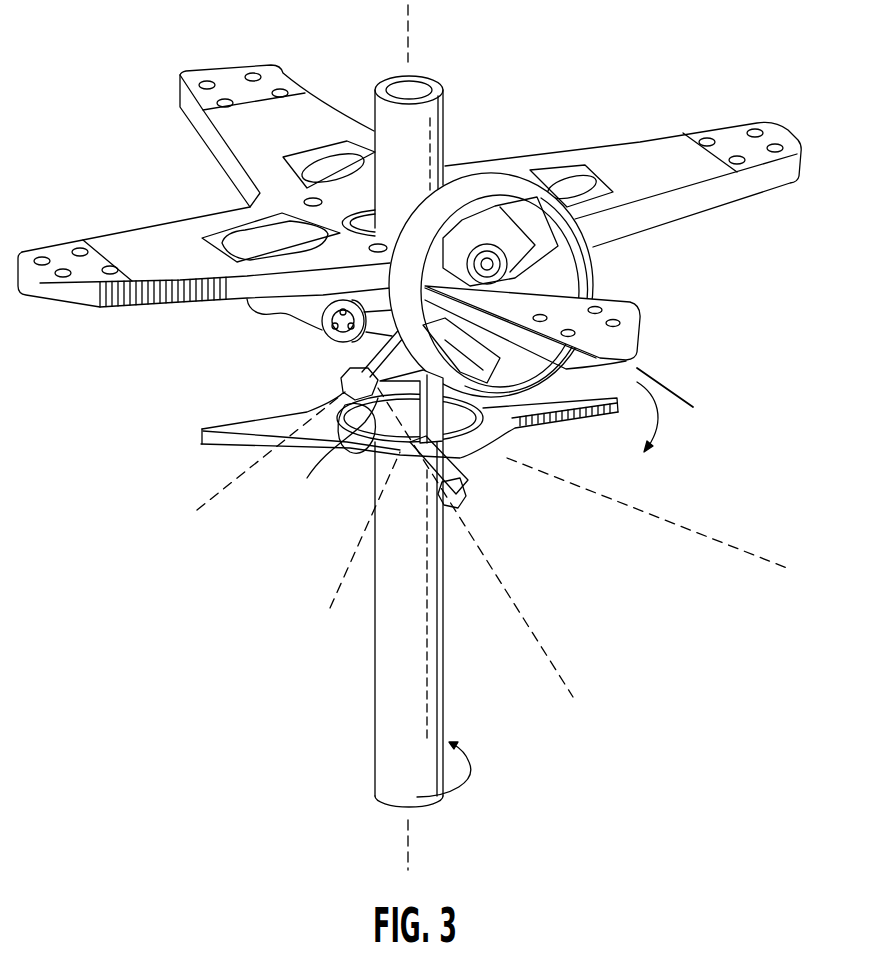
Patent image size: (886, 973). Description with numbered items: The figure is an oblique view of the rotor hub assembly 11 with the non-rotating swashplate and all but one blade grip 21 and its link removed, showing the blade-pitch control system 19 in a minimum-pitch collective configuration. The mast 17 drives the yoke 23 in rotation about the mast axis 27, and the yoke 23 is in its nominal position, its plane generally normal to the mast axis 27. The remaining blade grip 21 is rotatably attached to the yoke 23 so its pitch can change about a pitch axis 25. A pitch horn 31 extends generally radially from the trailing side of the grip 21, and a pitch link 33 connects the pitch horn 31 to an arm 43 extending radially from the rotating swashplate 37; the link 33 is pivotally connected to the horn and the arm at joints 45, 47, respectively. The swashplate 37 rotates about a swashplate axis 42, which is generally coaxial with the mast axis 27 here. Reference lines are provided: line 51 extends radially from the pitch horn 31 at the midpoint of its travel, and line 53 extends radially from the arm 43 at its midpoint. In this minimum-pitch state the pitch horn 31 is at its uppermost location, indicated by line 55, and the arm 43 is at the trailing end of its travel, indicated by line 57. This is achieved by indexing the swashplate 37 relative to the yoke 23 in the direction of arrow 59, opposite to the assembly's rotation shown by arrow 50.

The rotor hub assembly 11 is at (521, 114).
The mast 17 is at (388, 757).
The blade-pitch control system 19 is at (199, 446).
The blade grip 21 is at (592, 257).
The yoke 23 is at (134, 253).
The pitch axis 25 is at (680, 388).
The mast axis 27 is at (410, 19).
The pitch horn 31 is at (411, 406).
The pitch link 33 is at (363, 425).
The rotating swashplate 37 is at (516, 435).
The swashplate axis 42 is at (410, 828).
The arm 43 is at (460, 463).
The joint 45 is at (341, 383).
The joint 47 is at (462, 497).
The arrow 50 is at (470, 768).
The line 51 is at (343, 577).
The line 53 is at (693, 532).
The line 55 is at (210, 497).
The line 57 is at (538, 640).
The arrow 59 is at (660, 420).